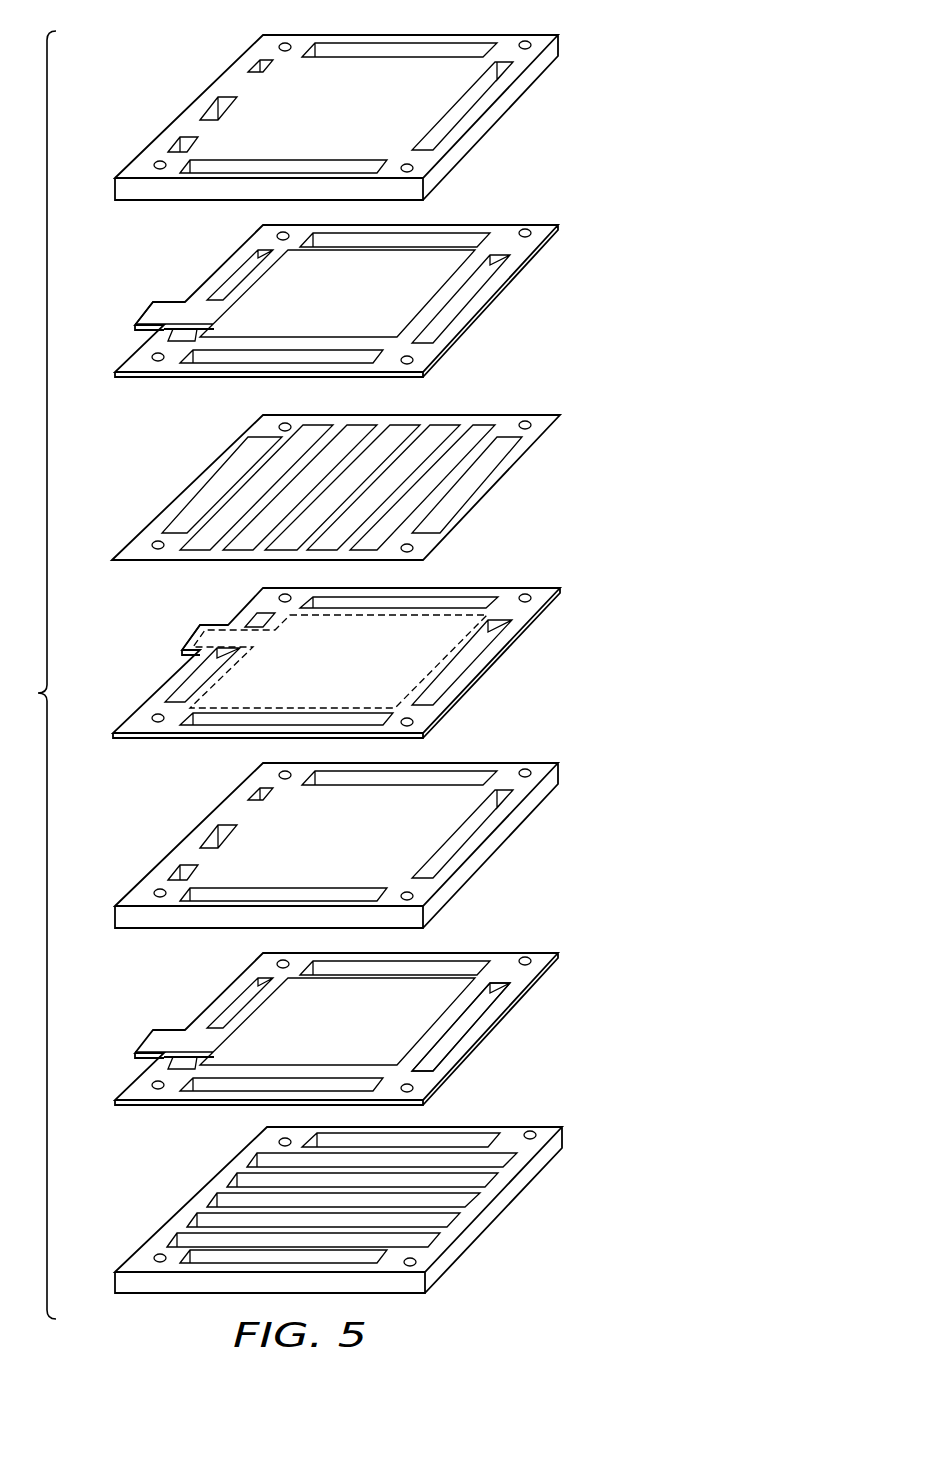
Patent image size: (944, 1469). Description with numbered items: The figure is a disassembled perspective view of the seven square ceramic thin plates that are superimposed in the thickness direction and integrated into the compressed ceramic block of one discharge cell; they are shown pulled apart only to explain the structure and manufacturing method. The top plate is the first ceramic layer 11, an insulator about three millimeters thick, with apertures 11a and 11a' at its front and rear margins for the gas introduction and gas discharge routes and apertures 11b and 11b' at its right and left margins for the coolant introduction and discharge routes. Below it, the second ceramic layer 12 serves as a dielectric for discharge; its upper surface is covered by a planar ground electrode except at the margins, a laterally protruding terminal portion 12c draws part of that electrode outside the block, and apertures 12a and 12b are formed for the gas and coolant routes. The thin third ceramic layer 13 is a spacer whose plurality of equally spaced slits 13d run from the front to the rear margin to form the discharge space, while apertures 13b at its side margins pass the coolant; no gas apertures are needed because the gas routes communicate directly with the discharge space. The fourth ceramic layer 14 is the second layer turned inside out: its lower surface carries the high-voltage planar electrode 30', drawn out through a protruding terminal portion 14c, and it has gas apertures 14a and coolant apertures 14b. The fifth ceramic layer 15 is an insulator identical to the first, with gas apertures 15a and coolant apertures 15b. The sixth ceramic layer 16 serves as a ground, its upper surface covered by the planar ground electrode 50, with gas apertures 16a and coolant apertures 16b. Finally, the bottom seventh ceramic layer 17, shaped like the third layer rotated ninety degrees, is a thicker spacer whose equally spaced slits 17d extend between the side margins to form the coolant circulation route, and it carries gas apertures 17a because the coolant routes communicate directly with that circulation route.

The first ceramic layer 11 is at (530, 78).
The aperture 11a is at (283, 126).
The aperture 11a' is at (431, 28).
The aperture 11b is at (215, 80).
The aperture 11b' is at (450, 104).
The second ceramic layer 12 is at (467, 300).
The aperture 12a is at (450, 243).
The aperture 12b is at (232, 283).
The terminal portion 12c is at (137, 332).
The third ceramic layer 13 is at (543, 430).
The aperture 13b is at (207, 495).
The slits 13d is at (267, 473).
The fourth ceramic layer 14 is at (547, 608).
The aperture 14a is at (472, 608).
The aperture 14b is at (187, 692).
The terminal portion 14c is at (188, 647).
The planar electrode 30' is at (358, 663).
The fifth ceramic layer 15 is at (547, 787).
The aperture 15a is at (460, 778).
The aperture 15b is at (218, 832).
The sixth ceramic layer 16 is at (557, 970).
The aperture 16a is at (200, 1088).
The aperture 16b is at (242, 1008).
The planar ground electrode 50 is at (438, 1018).
The seventh ceramic layer 17 is at (550, 1152).
The aperture 17a is at (470, 1140).
The slits 17d is at (503, 1157).